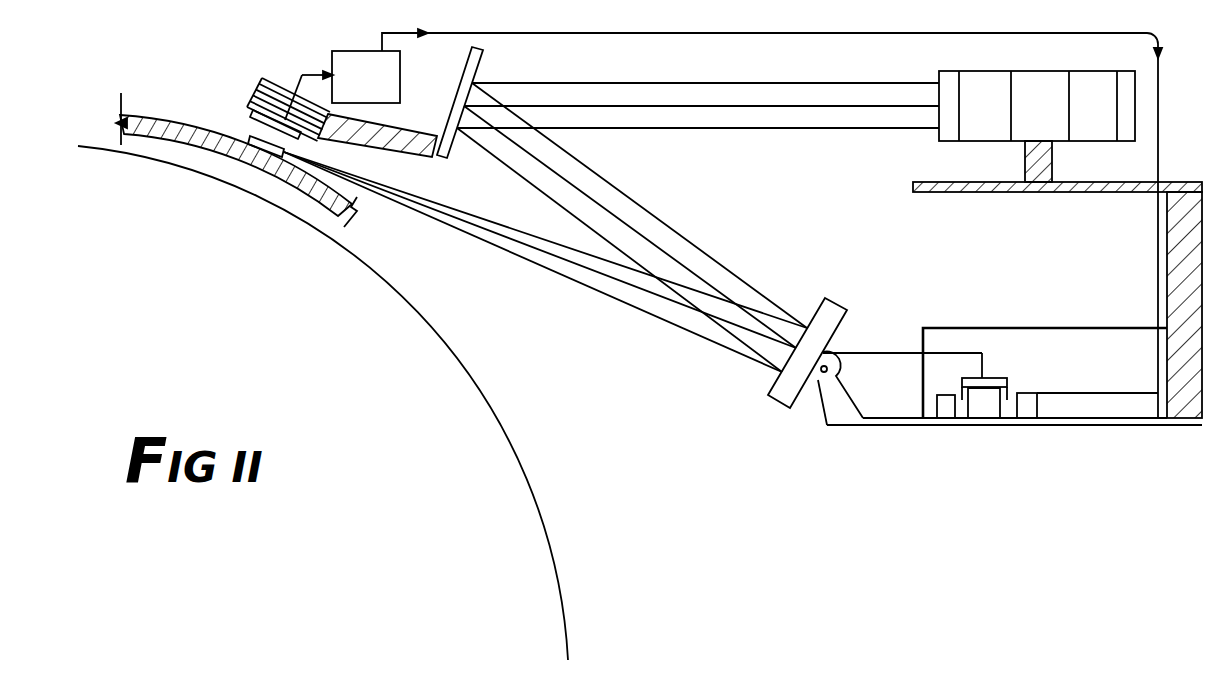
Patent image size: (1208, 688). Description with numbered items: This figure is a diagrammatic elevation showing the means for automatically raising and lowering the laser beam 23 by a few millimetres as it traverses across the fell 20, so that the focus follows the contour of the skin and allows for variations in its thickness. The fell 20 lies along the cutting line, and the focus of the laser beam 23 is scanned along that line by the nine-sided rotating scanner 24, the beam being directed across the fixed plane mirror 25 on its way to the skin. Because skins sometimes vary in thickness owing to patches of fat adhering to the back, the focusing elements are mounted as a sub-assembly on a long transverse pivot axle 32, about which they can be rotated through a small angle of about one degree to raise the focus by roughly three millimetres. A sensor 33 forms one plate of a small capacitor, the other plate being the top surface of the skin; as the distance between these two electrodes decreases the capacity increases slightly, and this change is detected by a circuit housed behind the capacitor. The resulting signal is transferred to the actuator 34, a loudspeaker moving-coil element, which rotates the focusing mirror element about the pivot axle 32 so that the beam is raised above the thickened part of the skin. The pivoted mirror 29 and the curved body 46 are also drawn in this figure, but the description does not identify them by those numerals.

The fell 20 is at (132, 117).
The laser beam 23 is at (247, 136).
The rotating scanner 24 is at (966, 78).
The fixed mirror 25 is at (470, 72).
The pivoted scanning mirror 29 is at (775, 398).
The pivot axle 32 is at (839, 426).
The sensor 33 is at (260, 95).
The actuator 34 is at (985, 378).
The cylindrical body 46 is at (538, 493).